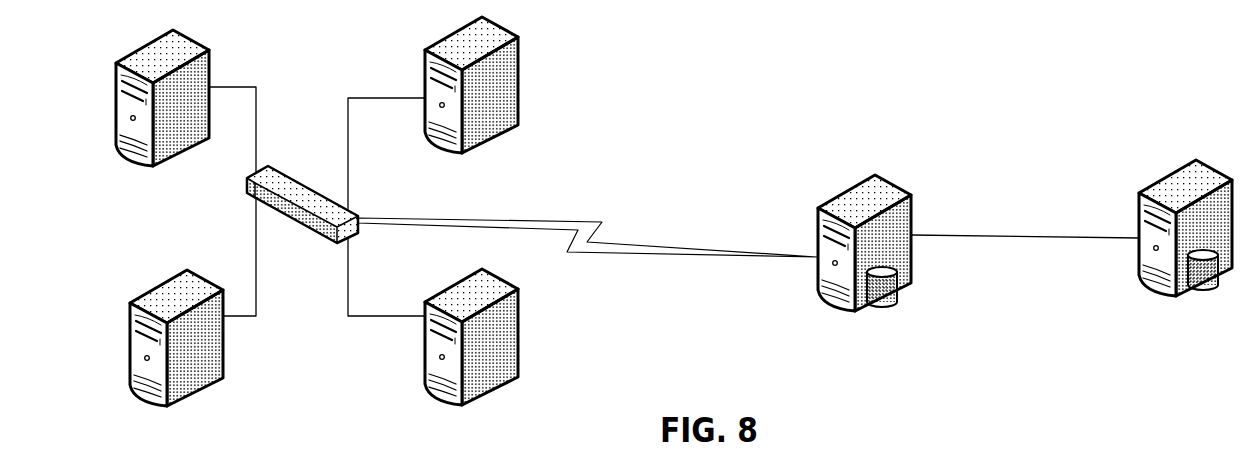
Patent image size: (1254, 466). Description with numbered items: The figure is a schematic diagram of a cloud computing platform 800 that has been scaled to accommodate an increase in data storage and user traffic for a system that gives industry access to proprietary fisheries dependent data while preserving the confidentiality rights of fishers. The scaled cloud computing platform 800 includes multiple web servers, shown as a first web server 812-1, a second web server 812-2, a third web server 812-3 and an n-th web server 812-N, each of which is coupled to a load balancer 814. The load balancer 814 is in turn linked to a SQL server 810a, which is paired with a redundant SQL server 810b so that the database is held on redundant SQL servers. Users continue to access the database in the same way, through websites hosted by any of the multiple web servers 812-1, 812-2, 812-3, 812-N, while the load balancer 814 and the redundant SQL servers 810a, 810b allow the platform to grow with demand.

The cloud computing platform 800 is at (727, 77).
The web server 812-1 is at (140, 49).
The web server 812-2 is at (447, 37).
The web server 812-3 is at (155, 288).
The web server 812-N is at (457, 283).
The load balancer 814 is at (302, 183).
The SQL server 810a is at (818, 208).
The redundant SQL server 810b is at (1170, 175).